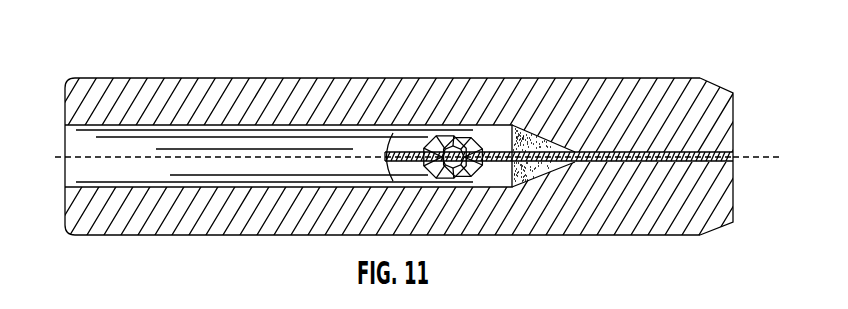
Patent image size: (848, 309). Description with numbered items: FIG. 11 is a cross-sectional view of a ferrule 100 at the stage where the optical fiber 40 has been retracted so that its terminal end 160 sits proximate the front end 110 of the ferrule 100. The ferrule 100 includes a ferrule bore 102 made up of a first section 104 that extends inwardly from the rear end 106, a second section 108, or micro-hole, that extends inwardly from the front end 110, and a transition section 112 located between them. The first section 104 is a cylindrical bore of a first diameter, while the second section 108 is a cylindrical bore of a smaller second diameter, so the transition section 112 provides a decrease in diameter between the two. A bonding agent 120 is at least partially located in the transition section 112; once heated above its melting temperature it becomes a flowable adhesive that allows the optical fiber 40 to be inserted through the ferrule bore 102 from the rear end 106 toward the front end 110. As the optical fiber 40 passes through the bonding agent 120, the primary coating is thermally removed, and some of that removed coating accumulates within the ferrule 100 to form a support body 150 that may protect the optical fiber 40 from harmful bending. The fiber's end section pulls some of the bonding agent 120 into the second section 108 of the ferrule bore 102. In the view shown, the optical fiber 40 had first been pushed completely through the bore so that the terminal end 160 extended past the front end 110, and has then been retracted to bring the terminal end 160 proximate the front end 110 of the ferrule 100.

The ferrule 100 is at (107, 70).
The ferrule bore 102 is at (56, 138).
The first section 104 is at (188, 124).
The rear end 106 is at (64, 95).
The second section 108 is at (653, 150).
The front end 110 is at (735, 104).
The transition section 112 is at (540, 136).
The bonding agent 120 is at (530, 167).
The support body 150 is at (455, 133).
The terminal end 160 is at (735, 156).
The optical fiber 40 is at (714, 160).